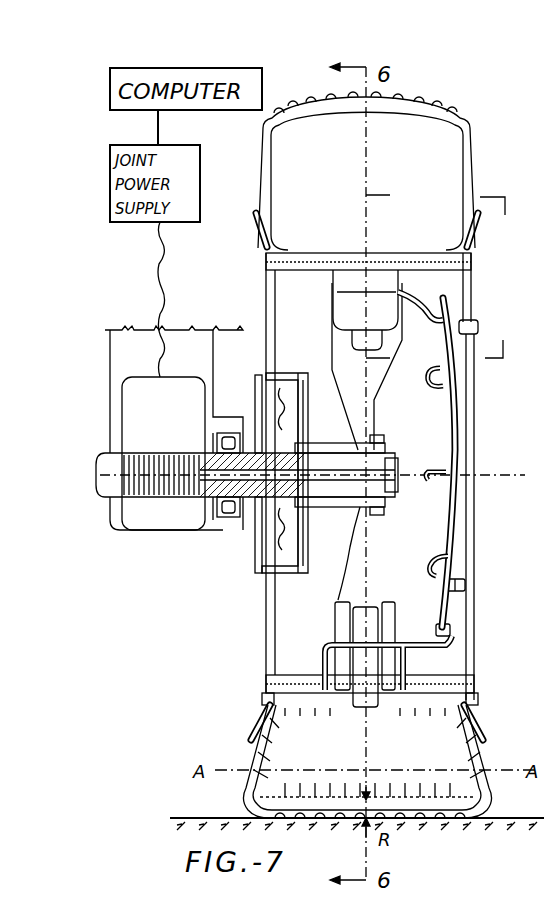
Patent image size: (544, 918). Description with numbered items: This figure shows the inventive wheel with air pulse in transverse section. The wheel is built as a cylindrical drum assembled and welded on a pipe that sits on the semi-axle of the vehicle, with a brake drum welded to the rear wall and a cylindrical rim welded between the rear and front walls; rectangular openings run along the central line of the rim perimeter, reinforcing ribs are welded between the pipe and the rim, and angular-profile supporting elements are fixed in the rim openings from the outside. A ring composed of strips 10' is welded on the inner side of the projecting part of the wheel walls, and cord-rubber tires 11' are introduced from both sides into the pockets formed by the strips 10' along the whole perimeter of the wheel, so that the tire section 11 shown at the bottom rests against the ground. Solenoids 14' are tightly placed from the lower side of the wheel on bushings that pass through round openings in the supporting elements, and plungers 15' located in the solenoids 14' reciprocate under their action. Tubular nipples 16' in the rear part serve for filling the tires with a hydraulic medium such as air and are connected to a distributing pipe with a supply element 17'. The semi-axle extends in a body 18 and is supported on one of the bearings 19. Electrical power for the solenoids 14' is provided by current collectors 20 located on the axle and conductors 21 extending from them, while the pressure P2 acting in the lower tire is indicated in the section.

The strips 10' is at (366, 471).
The cord-rubber tires 11' is at (390, 168).
The tire lower section 11 is at (393, 761).
The solenoids 14' is at (339, 435).
The plungers 15' is at (376, 635).
The tubular nipples 16' is at (444, 650).
The supply element 17' is at (491, 593).
The body 18 is at (123, 348).
The bearings 19 is at (222, 524).
The current collectors 20 is at (161, 461).
The conductors 21 is at (426, 459).
The pressure P2 is at (370, 778).